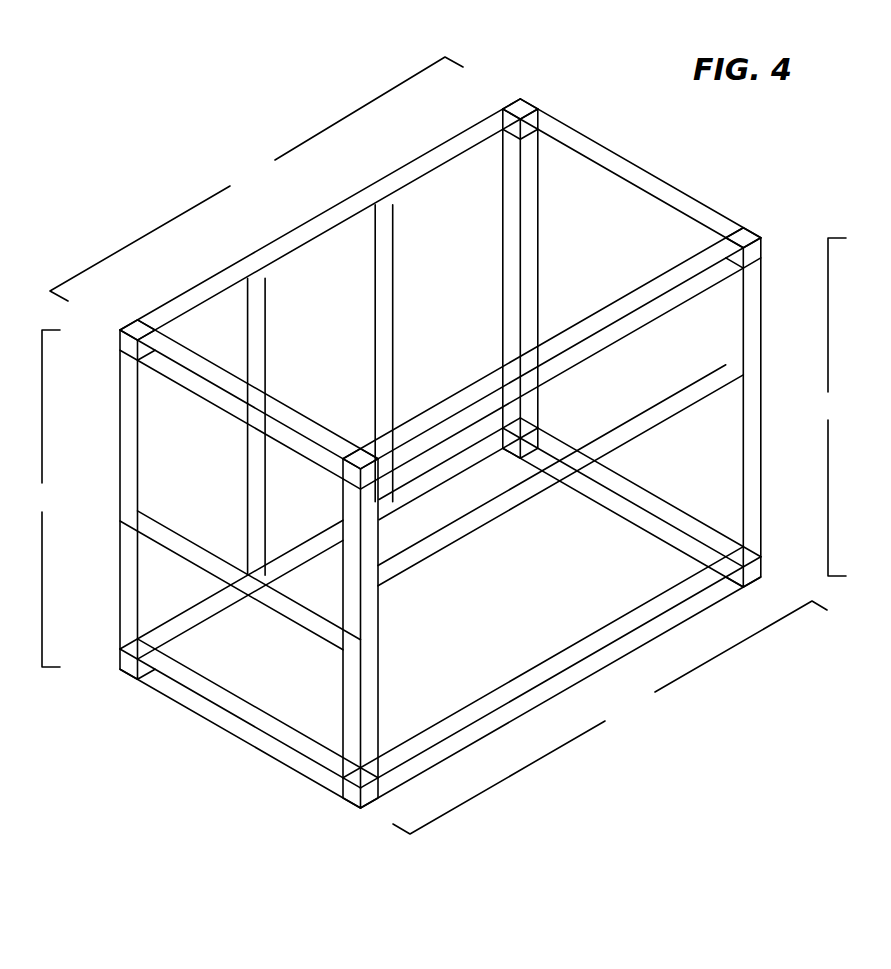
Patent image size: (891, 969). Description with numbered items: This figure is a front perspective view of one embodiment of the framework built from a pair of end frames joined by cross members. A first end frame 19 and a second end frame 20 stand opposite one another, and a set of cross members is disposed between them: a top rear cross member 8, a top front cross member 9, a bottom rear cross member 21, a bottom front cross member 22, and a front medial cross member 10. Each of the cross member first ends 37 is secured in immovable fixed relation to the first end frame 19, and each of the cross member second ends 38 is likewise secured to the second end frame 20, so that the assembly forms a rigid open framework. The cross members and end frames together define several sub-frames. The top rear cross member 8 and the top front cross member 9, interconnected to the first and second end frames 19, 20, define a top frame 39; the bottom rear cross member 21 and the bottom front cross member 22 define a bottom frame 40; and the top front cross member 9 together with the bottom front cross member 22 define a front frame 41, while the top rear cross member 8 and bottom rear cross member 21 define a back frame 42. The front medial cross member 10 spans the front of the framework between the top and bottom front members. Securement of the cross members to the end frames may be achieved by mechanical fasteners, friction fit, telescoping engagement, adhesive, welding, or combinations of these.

The top rear cross member 8 is at (362, 191).
The top front cross member 9 is at (612, 303).
The front medial cross member 10 is at (466, 534).
The first end frame 19 is at (120, 436).
The second end frame 20 is at (762, 326).
The bottom rear cross member 21 is at (238, 614).
The bottom front cross member 22 is at (655, 638).
The cross member first ends 37 is at (156, 331).
The cross member second ends 38 is at (538, 135).
The top frame 39 is at (256, 179).
The bottom frame 40 is at (610, 717).
The front frame 41 is at (844, 407).
The frame height 42 is at (45, 498).